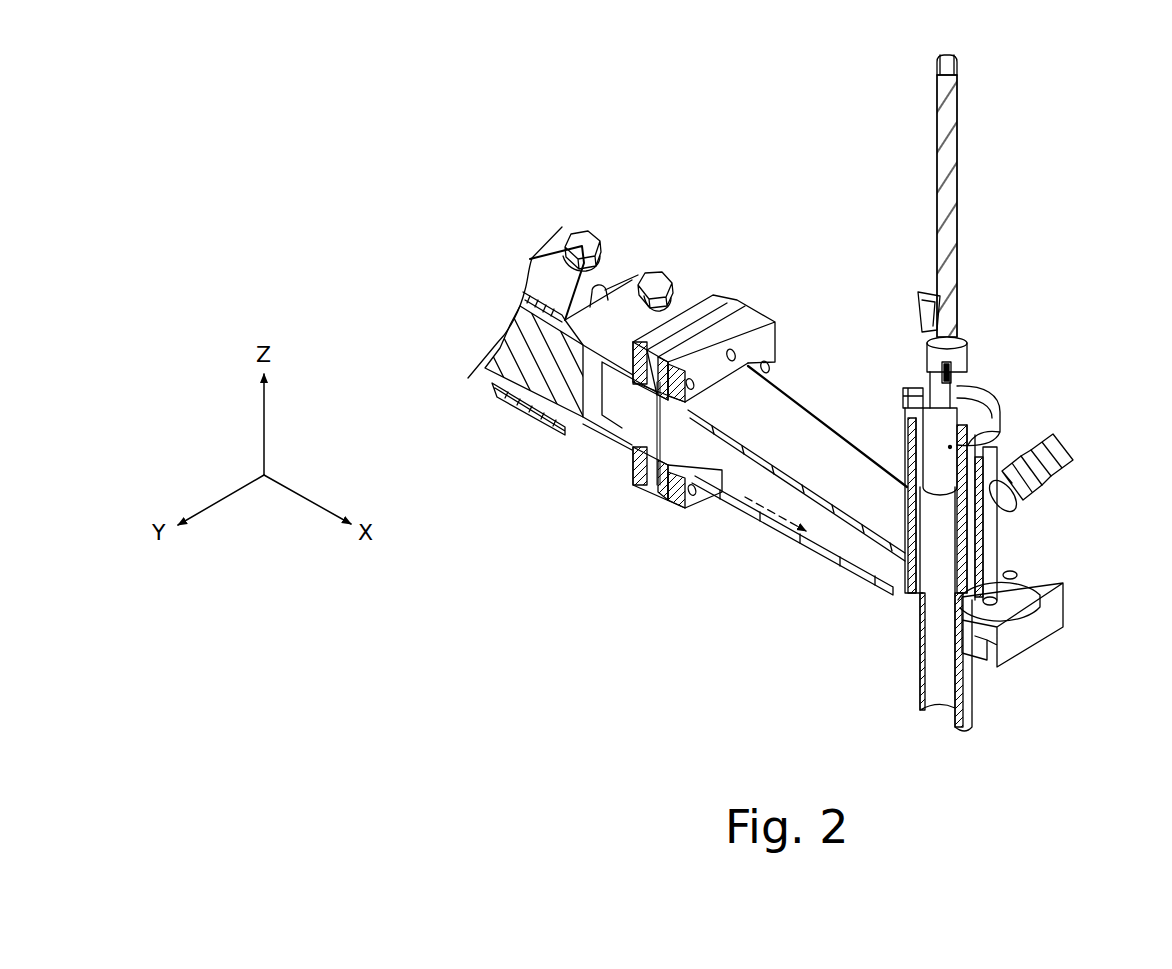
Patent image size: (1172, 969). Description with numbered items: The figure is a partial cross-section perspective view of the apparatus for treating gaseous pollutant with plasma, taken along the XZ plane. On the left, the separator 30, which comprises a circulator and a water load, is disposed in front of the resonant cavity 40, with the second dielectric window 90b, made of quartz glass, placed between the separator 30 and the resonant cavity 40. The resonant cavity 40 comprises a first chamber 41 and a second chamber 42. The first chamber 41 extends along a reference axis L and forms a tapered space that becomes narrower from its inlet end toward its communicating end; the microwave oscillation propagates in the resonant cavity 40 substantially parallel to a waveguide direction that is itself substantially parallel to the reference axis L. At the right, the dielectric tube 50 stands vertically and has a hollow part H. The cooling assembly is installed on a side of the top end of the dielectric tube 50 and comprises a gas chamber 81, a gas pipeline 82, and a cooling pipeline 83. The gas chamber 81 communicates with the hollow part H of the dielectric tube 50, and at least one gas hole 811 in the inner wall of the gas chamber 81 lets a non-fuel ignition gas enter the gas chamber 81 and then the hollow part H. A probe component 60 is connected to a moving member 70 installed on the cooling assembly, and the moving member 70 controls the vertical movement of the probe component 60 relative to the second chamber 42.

The separator 30 is at (622, 256).
The second dielectric window 90b is at (750, 312).
The resonant cavity 40 is at (752, 490).
The first chamber 41 is at (727, 470).
The second chamber 42 is at (912, 592).
The reference axis L is at (766, 522).
The moving member 70 is at (948, 220).
The gas pipeline 82 is at (910, 438).
The probe component 60 is at (942, 378).
The gas chamber 81 is at (945, 425).
The gas hole 811 is at (952, 447).
The cooling pipeline 83 is at (962, 527).
The hollow part H is at (943, 601).
The dielectric tube 50 is at (963, 712).